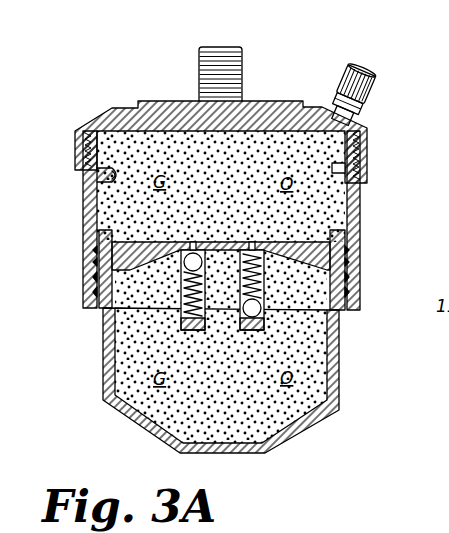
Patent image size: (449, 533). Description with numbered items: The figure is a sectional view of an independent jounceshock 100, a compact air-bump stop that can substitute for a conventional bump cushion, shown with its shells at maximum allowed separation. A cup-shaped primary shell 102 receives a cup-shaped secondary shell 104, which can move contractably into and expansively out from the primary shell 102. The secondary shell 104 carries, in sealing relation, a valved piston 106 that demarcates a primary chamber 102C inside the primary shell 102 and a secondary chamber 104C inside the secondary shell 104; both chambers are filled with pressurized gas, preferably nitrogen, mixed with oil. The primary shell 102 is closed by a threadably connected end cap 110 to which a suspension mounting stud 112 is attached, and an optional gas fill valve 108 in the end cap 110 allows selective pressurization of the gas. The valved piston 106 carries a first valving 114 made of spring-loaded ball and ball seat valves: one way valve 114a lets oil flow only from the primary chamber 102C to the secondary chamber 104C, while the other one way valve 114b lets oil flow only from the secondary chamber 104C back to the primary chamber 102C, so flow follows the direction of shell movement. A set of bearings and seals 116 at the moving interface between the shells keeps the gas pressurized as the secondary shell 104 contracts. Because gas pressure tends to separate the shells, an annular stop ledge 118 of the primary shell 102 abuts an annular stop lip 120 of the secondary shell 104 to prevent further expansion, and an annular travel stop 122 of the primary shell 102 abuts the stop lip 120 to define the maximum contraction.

The independent jounceshock 100 is at (378, 141).
The primary shell 102 is at (82, 230).
The primary chamber 102C is at (128, 143).
The secondary shell 104 is at (102, 353).
The secondary chamber 104C is at (293, 400).
The valved piston 106 is at (367, 167).
The gas fill valve 108 is at (337, 114).
The end cap 110 is at (162, 100).
The suspension mounting stud 112 is at (231, 46).
The first valving 114 is at (218, 274).
The one way valve 114a is at (184, 292).
The one way valve 114b is at (264, 293).
The set of bearings and seals 116 is at (345, 275).
The annular stop ledge 118 is at (345, 251).
The annular stop lip 120 is at (294, 239).
The annular travel stop 122 is at (118, 180).